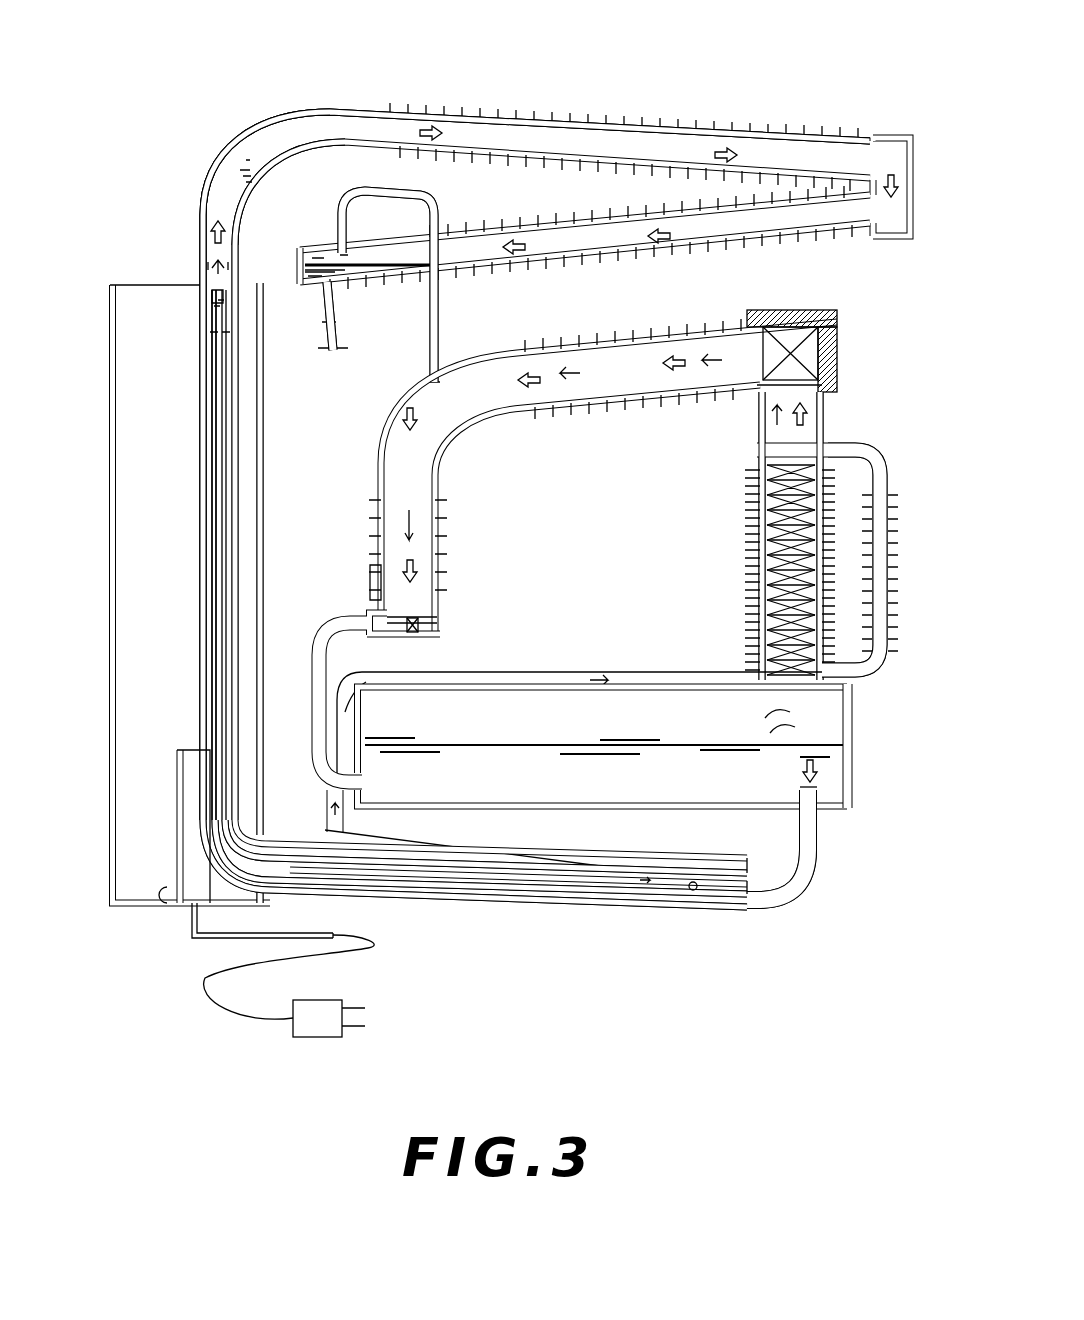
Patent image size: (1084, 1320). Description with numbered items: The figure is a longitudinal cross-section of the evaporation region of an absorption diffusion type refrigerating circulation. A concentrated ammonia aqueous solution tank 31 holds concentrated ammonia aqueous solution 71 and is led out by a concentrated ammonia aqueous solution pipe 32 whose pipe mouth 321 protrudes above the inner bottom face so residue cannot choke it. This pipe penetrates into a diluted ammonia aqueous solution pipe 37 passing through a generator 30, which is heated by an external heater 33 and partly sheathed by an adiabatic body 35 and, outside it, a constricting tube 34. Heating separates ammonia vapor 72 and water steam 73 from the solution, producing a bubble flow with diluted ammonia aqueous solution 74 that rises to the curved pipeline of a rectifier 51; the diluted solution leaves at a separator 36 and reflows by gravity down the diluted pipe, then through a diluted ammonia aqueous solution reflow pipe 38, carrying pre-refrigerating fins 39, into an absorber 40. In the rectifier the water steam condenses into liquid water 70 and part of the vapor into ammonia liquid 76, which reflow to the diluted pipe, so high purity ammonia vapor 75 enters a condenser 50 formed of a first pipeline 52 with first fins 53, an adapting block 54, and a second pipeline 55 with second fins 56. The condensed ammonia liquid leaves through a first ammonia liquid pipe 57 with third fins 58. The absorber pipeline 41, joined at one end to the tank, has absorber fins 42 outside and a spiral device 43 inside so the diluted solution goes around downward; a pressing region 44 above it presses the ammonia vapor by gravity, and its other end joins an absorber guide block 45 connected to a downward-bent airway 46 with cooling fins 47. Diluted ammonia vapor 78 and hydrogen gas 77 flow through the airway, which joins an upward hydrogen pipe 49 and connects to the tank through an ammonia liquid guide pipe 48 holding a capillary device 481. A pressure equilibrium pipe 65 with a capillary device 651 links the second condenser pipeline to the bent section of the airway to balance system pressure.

The generator 30 is at (120, 905).
The concentrated ammonia aqueous solution tank 31 is at (855, 780).
The concentrated ammonia aqueous solution pipe 32 is at (820, 855).
The pipe mouth 321 is at (820, 790).
The heater 33 is at (185, 895).
The constricting tube 34 is at (265, 355).
The adiabatic body 35 is at (125, 330).
The separator 36 is at (215, 300).
The diluted ammonia aqueous solution pipe 37 is at (655, 905).
The diluted ammonia aqueous solution reflow pipe 38 is at (888, 475).
The pre-refrigerating fins 39 is at (893, 640).
The absorber 40 is at (715, 495).
The absorber pipeline 41 is at (757, 490).
The absorber fins 42 is at (757, 590).
The spiral device 43 is at (757, 545).
The pressing region 44 is at (807, 400).
The absorber guide block 45 is at (840, 318).
The airway 46 is at (610, 395).
The cooling fins 47 is at (680, 390).
The ammonia liquid guide pipe 48 is at (372, 615).
The capillary device 481 is at (375, 585).
The hydrogen pipe 49 is at (405, 600).
The condenser 50 is at (560, 95).
The rectifier 51 is at (215, 185).
The first pipeline of condenser 52 is at (858, 133).
The first fins 53 is at (680, 122).
The adapting block of condenser 54 is at (890, 138).
The second pipeline of condenser 55 is at (815, 235).
The second fins 56 is at (737, 250).
The first ammonia liquid pipe 57 is at (345, 325).
The third fins 58 is at (327, 345).
The pressure equilibrium pipe 65 is at (427, 198).
The capillary device 651 is at (380, 192).
The liquid water 70 is at (260, 160).
The concentrated ammonia aqueous solution 71 is at (822, 460).
The ammonia vapor 72 is at (222, 622).
The water steam 73 is at (255, 188).
The diluted ammonia aqueous solution 74 is at (218, 410).
The high purity ammonia vapor 75 is at (430, 115).
The ammonia liquid 76 is at (308, 253).
The hydrogen gas 77 is at (825, 415).
The diluted ammonia vapor 78 is at (565, 370).